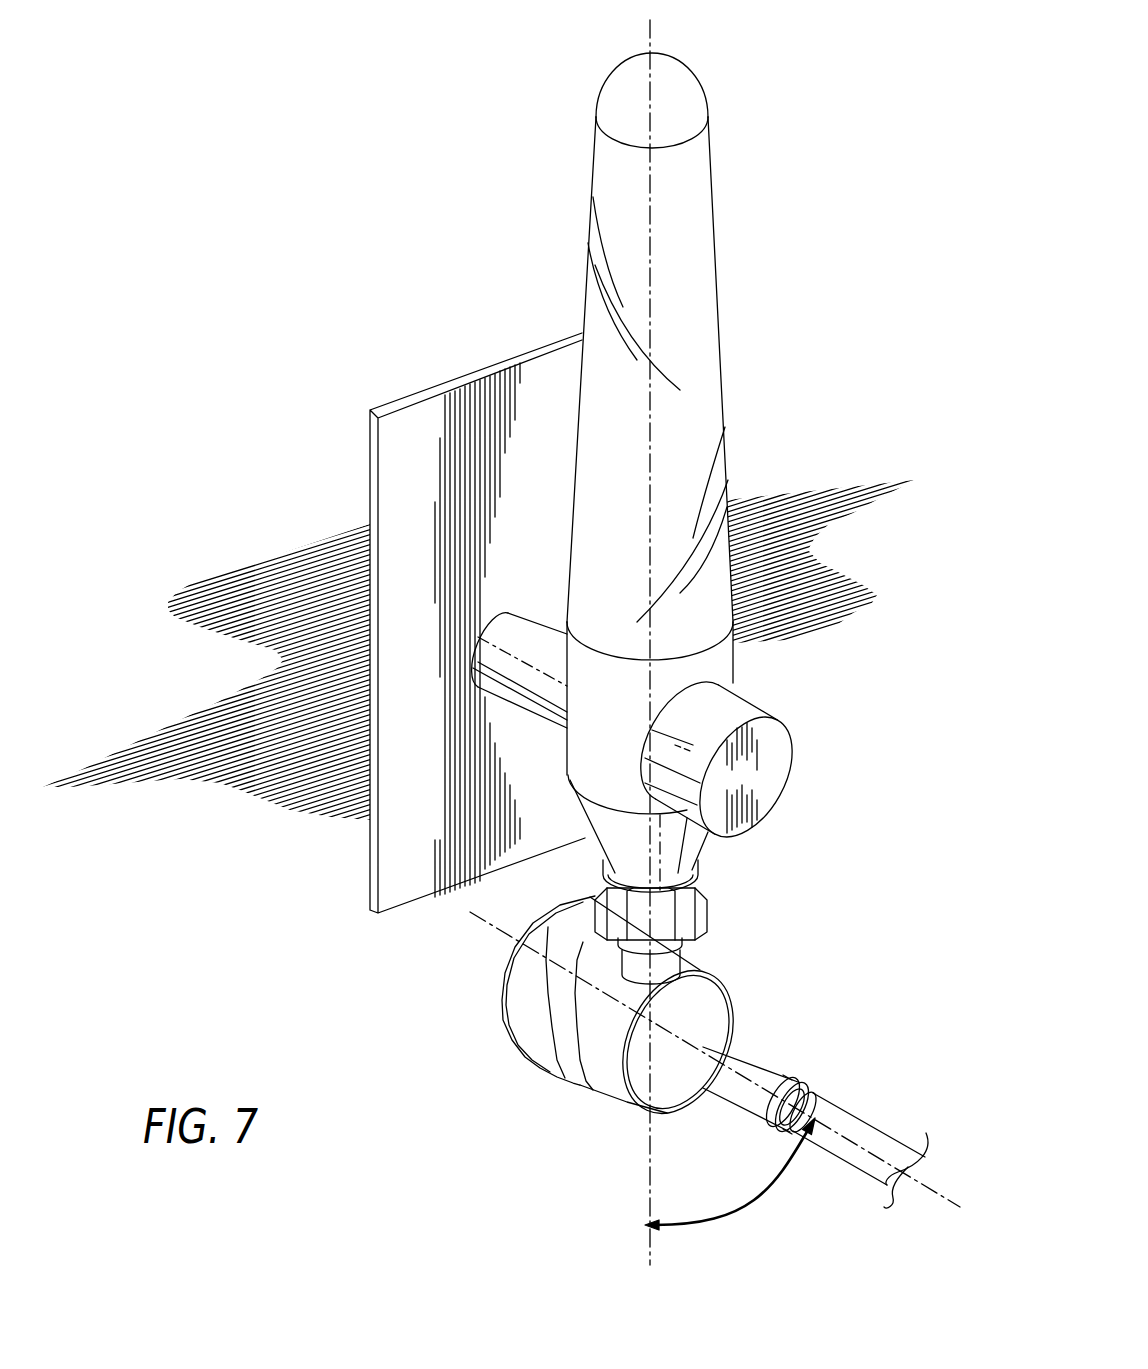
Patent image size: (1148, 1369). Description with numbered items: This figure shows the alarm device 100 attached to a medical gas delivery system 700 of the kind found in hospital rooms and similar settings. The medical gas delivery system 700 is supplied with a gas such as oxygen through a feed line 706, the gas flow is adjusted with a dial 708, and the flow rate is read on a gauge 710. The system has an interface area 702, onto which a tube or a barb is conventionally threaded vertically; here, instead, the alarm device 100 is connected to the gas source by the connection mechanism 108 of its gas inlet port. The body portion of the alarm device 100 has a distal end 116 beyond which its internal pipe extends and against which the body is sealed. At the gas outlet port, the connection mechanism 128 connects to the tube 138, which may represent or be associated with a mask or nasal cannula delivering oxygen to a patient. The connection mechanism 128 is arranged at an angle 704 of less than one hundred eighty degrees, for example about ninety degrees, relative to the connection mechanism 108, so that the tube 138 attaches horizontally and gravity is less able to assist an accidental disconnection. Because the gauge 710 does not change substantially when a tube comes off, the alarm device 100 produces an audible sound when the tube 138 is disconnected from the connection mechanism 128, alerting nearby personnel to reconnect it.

The alarm device 100 is at (664, 1048).
The connection mechanism 108 is at (700, 913).
The distal end 116 is at (638, 1073).
The connection mechanism 128 is at (802, 1097).
The tube 138 is at (863, 1132).
The medical gas delivery system 700 is at (614, 483).
The interface area 702 is at (687, 848).
The angle 704 is at (753, 1206).
The feed line 706 is at (490, 652).
The dial 708 is at (767, 758).
The gauge 710 is at (692, 202).